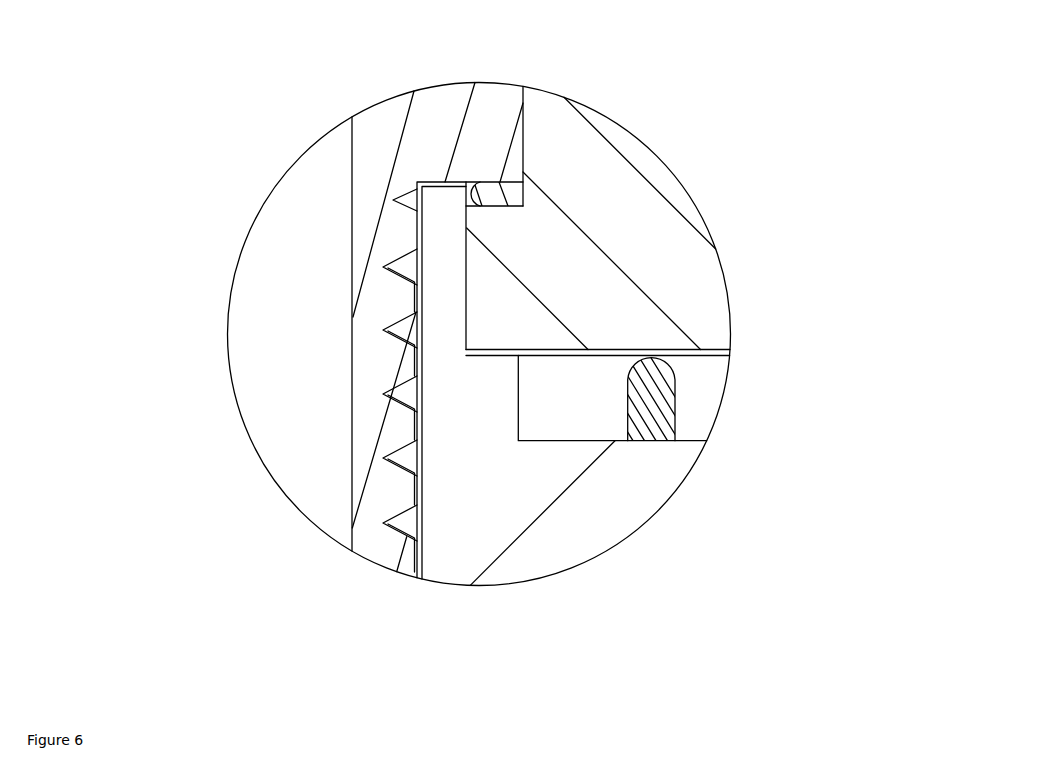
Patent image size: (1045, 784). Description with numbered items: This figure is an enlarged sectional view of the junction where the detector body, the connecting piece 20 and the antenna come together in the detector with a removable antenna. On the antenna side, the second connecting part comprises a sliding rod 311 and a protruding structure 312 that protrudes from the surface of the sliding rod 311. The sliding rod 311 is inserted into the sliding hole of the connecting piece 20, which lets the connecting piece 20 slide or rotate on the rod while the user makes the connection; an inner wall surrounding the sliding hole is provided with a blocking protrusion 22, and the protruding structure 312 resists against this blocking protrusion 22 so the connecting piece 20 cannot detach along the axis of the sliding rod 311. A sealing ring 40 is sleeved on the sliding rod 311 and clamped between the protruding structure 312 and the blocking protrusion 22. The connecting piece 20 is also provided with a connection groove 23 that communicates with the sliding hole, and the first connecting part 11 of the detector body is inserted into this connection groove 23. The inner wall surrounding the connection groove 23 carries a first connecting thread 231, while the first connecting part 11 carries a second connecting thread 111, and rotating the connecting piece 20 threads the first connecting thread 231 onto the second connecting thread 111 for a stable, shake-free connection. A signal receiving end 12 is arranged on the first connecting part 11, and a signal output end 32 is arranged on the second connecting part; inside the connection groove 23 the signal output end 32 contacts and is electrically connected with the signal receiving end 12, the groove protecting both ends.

The first connecting part 11 is at (557, 523).
The second connecting thread 111 is at (407, 452).
The signal receiving end 12 is at (655, 405).
The connecting piece 20 is at (373, 502).
The blocking protrusion 22 is at (498, 172).
The connection groove 23 is at (420, 297).
The first connecting thread 231 is at (413, 370).
The sliding rod 311 is at (567, 100).
The protruding structure 312 is at (657, 280).
The signal output end 32 is at (663, 349).
The sealing ring 40 is at (512, 193).